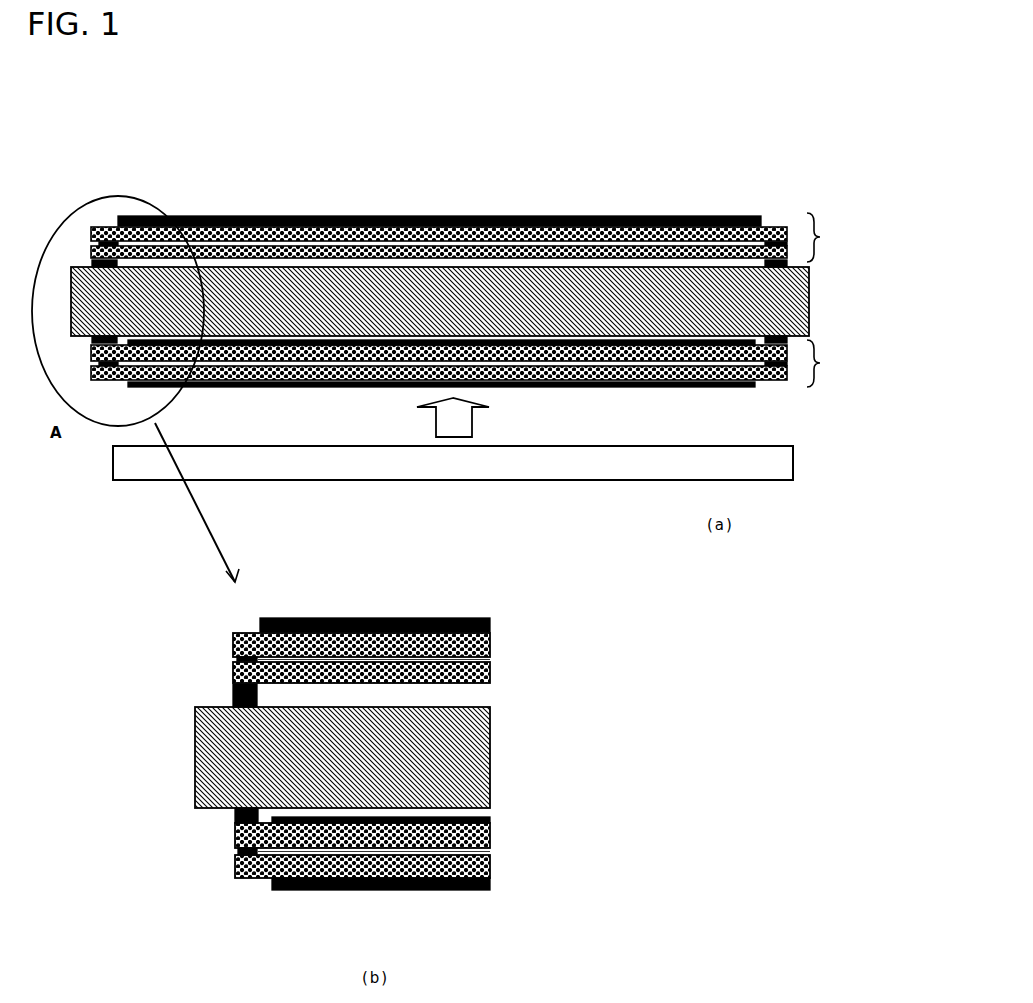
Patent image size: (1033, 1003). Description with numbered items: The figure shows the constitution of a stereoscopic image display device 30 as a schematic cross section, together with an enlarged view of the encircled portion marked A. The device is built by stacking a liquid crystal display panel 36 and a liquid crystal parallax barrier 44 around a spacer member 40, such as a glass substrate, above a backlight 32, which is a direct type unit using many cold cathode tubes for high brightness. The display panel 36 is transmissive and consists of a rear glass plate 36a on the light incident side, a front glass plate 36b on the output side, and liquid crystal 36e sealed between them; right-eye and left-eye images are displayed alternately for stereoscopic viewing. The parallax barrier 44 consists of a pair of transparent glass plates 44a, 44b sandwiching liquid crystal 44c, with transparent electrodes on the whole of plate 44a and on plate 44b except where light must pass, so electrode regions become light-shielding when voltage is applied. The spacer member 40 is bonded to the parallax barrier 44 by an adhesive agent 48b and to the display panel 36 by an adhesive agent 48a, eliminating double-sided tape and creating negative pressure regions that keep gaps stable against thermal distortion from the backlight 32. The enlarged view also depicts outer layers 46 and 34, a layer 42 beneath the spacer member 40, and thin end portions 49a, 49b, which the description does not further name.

The stereoscopic image display device 30 is at (478, 155).
The backlight 32 is at (818, 461).
The lower protective layer 34 is at (492, 885).
The liquid crystal display panel 36 is at (828, 359).
The rear glass plate 36a is at (492, 865).
The front glass plate 36b is at (492, 837).
The liquid crystal 36e is at (492, 848).
The spacer member 40 is at (828, 300).
The adhesive layer 42 is at (492, 813).
The liquid crystal parallax barrier 44 is at (828, 235).
The transparent glass plate 44a is at (492, 668).
The transparent glass plate 44b is at (492, 639).
The liquid crystal 44c is at (492, 658).
The upper protective layer 46 is at (492, 620).
The adhesive agent 48a is at (227, 816).
The adhesive agent 48b is at (225, 693).
The end sealing layer 49a is at (233, 855).
The end sealing layer 49b is at (227, 657).